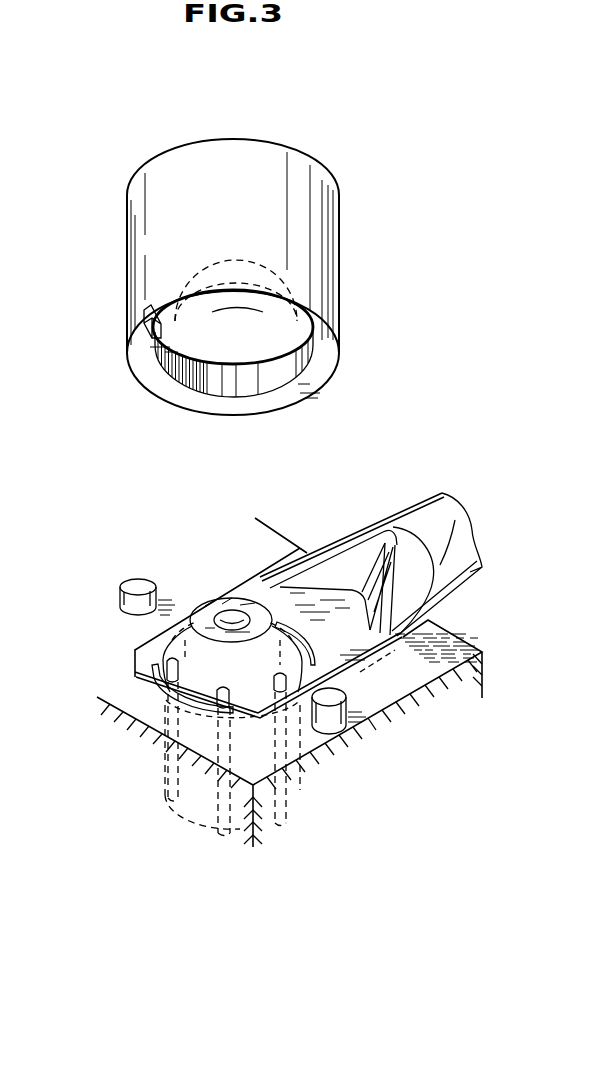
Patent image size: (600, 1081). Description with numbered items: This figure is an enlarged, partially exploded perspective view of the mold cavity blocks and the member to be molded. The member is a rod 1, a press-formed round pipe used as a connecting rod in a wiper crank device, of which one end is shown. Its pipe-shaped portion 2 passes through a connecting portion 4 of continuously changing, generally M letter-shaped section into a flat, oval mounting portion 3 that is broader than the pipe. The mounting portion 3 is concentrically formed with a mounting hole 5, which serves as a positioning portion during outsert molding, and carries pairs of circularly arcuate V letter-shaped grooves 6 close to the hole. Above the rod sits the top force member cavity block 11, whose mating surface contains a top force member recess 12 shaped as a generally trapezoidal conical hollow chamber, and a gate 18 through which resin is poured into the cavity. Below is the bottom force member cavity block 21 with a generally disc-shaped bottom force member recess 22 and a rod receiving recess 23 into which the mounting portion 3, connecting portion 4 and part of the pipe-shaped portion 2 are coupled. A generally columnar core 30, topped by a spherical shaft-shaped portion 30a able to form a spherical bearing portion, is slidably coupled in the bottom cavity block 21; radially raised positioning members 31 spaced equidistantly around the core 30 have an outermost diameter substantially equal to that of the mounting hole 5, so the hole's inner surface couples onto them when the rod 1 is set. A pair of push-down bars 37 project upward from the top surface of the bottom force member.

The rod 1 is at (417, 493).
The pipe-shaped portion 2 is at (474, 575).
The mounting portion 3 is at (272, 587).
The connecting portion 4 is at (348, 562).
The mounting hole 5 is at (181, 620).
The V letter-shaped grooves 6 is at (304, 637).
The top force member cavity block 11 is at (347, 257).
The top force member recess 12 is at (187, 383).
The gate 18 is at (144, 322).
The bottom force member cavity block 21 is at (323, 748).
The bottom force member recess 22 is at (342, 688).
The rod receiving recess 23 is at (358, 668).
The core 30 is at (187, 825).
The spherical shaft-shaped portion 30a is at (212, 600).
The positioning members 31 is at (267, 692).
The push-down bars 37 is at (137, 583).